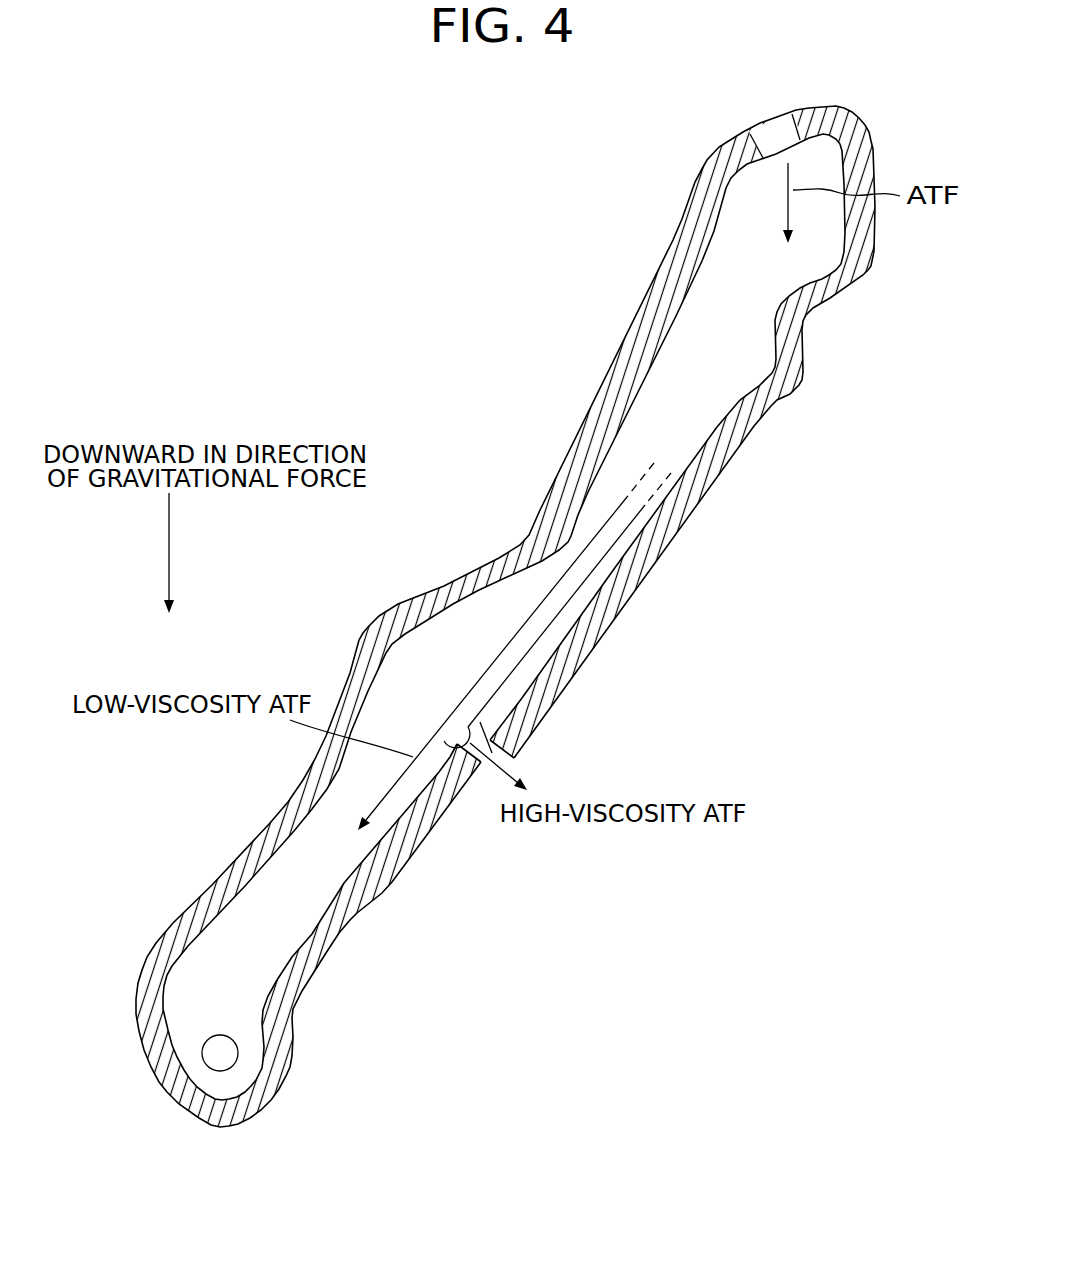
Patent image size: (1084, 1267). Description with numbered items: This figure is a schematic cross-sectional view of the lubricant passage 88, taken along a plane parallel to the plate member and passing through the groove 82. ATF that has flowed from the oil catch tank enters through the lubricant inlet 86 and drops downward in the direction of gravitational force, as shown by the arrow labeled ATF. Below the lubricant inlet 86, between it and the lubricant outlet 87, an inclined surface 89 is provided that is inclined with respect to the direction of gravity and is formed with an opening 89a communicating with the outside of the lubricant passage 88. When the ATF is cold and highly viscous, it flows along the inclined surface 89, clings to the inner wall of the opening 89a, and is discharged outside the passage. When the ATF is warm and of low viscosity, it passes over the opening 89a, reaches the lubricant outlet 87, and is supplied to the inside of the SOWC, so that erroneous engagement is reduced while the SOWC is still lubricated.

The groove 82 is at (505, 586).
The lubricant inlet 86 is at (764, 148).
The lubricant outlet 87 is at (238, 1052).
The lubricant passage 88 is at (505, 586).
The inclined surface 89 is at (705, 424).
The opening 89a is at (468, 753).